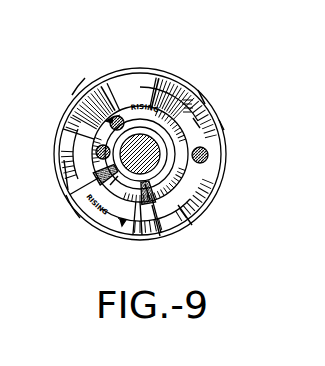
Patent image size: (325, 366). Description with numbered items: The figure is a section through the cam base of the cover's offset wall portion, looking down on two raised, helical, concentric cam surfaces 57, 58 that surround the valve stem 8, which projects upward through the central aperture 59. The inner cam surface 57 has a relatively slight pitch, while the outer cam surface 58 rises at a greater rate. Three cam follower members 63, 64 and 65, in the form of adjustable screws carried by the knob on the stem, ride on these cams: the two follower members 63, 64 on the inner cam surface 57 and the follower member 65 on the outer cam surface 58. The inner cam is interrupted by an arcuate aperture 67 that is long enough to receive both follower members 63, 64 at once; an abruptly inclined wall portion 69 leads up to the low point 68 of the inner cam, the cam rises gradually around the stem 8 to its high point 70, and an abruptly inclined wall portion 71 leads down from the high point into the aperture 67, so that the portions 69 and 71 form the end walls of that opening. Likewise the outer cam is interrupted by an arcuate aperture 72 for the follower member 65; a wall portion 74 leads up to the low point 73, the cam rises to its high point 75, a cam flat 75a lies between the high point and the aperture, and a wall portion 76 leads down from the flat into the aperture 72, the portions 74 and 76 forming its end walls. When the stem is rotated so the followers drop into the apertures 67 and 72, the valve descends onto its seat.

The valve stem 8 is at (119, 178).
The inner cam surface 57 is at (202, 119).
The outer cam surface 58 is at (222, 126).
The aperture 59 is at (152, 190).
The cam follower member 63 is at (96, 151).
The cam follower member 64 is at (110, 126).
The cam follower member 65 is at (208, 155).
The arcuate aperture 67 is at (141, 212).
The low point of inner cam surface 68 is at (186, 216).
The abruptly inclined wall portion 69 is at (154, 205).
The high point of inner cam surface 70 is at (74, 178).
The abruptly inclined wall portion 71 is at (78, 198).
The arcuate aperture 72 is at (128, 82).
The low point of outer cam surface 73 is at (84, 95).
The abruptly inclined wall portion 74 is at (92, 85).
The high point of outer cam surface 75 is at (203, 102).
The cam flat 75a is at (190, 98).
The abruptly inclined wall portion 76 is at (168, 80).